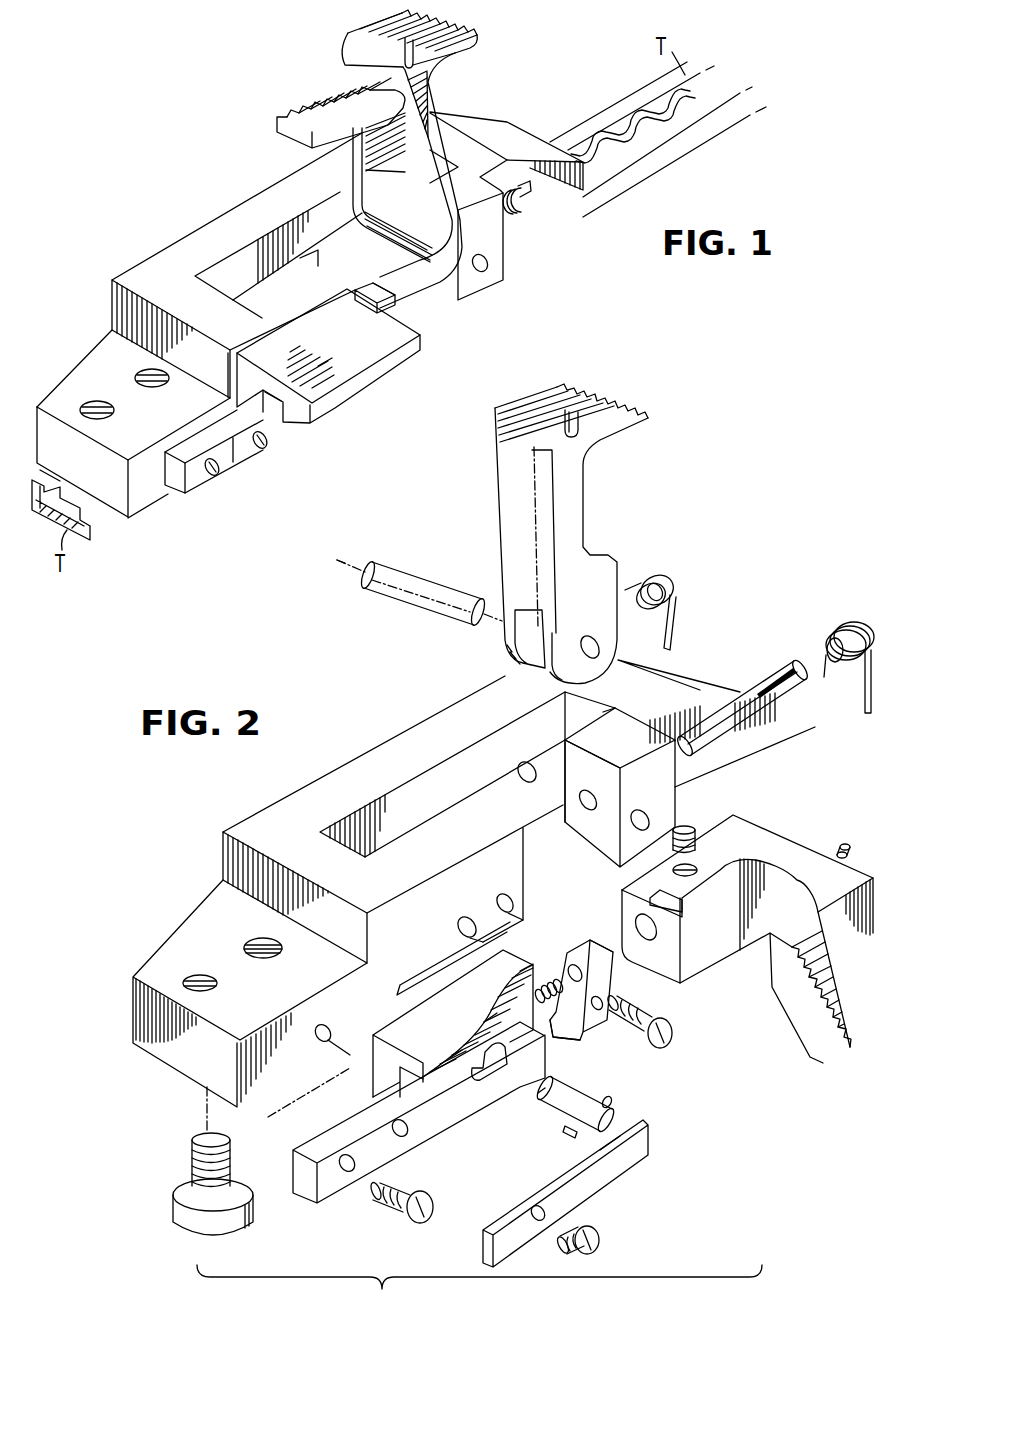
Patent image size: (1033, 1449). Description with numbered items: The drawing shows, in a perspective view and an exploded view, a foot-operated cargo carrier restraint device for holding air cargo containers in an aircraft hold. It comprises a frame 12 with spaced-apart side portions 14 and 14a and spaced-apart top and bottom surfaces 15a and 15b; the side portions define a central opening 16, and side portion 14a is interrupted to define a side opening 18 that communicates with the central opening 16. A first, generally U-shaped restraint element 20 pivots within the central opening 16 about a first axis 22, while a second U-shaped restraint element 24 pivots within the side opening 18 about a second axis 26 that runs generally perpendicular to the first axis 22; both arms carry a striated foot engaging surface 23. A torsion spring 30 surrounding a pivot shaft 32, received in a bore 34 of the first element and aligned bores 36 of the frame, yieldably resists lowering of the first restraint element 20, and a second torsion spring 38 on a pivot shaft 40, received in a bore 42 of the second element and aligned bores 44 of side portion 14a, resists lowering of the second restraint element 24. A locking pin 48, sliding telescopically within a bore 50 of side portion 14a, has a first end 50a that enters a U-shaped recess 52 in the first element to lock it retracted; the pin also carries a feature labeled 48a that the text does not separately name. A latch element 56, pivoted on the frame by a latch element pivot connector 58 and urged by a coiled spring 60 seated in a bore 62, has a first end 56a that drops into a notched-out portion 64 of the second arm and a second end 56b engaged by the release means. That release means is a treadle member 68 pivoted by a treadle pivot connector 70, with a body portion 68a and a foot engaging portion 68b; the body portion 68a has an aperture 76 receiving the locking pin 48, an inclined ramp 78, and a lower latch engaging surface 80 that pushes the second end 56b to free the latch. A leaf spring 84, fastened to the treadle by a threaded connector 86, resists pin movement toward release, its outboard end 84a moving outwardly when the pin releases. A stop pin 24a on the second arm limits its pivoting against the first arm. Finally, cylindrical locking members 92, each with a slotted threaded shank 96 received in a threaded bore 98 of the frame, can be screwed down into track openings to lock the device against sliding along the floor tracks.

In FIG. 1, the frame 12 is at (190, 206).
In FIG. 2, the frame 12 is at (256, 781).
In FIG. 1, the side portion 14 is at (233, 207).
In FIG. 2, the side portion 14 is at (348, 762).
In FIG. 1, the side portion 14a is at (260, 308).
In FIG. 2, the side portion 14a is at (637, 763).
In FIG. 1, the top surface 15a is at (158, 283).
In FIG. 2, the top surface 15a is at (270, 846).
In FIG. 1, the bottom surface 15b is at (148, 510).
In FIG. 2, the bottom surface 15b is at (165, 1060).
In FIG. 1, the central opening 16 is at (281, 236).
In FIG. 2, the central opening 16 is at (360, 822).
In FIG. 1, the side opening 18 is at (346, 258).
In FIG. 2, the side opening 18 is at (488, 803).
In FIG. 1, the first restraint element 20 is at (384, 160).
In FIG. 2, the first restraint element 20 is at (571, 535).
In FIG. 2, the first axis 22 is at (343, 563).
In FIG. 1, the striated foot engaging surface 23 is at (455, 22).
In FIG. 2, the striated foot engaging surface 23 is at (572, 388).
In FIG. 1, the second restraint element 24 is at (418, 153).
In FIG. 2, the second restraint element 24 is at (777, 828).
In FIG. 2, the stop pin 24a is at (844, 845).
In FIG. 2, the second axis 26 is at (578, 810).
In FIG. 2, the torsion spring 30 is at (663, 570).
In FIG. 1, the pivot shaft 32 is at (486, 273).
In FIG. 2, the pivot shaft 32 is at (410, 600).
In FIG. 2, the bore 34 is at (598, 648).
In FIG. 2, the aligned bores 36 is at (527, 762).
In FIG. 1, the second torsion spring 38 is at (520, 212).
In FIG. 2, the second torsion spring 38 is at (840, 622).
In FIG. 1, the pivot shaft 40 is at (530, 200).
In FIG. 2, the pivot shaft 40 is at (785, 690).
In FIG. 2, the bore 42 is at (658, 934).
In FIG. 2, the aligned bores 44 is at (586, 795).
In FIG. 2, the locking pin 48 is at (552, 1112).
In FIG. 2, the stud of pin 48a is at (612, 1102).
In FIG. 2, the bore 50 is at (465, 918).
In FIG. 2, the first end 50a is at (538, 1095).
In FIG. 1, the U-shaped recess 52 is at (416, 50).
In FIG. 2, the U-shaped recess 52 is at (578, 420).
In FIG. 1, the latch element 56 is at (362, 310).
In FIG. 2, the latch element 56 is at (600, 1028).
In FIG. 1, the first end 56a is at (373, 290).
In FIG. 2, the first end 56a is at (609, 962).
In FIG. 2, the second end 56b is at (558, 1034).
In FIG. 2, the latch element pivot connector 58 is at (676, 1042).
In FIG. 2, the coiled spring 60 is at (545, 982).
In FIG. 2, the bore 62 is at (578, 964).
In FIG. 1, the notched-out portion 64 is at (303, 262).
In FIG. 2, the notched-out portion 64 is at (670, 902).
In FIG. 1, the treadle member 68 is at (385, 373).
In FIG. 2, the treadle member 68 is at (374, 1071).
In FIG. 1, the body portion 68a is at (273, 407).
In FIG. 2, the body portion 68a is at (408, 1130).
In FIG. 1, the foot engaging portion 68b is at (340, 367).
In FIG. 1, the treadle pivot connector 70 is at (212, 477).
In FIG. 2, the treadle pivot connector 70 is at (387, 1207).
In FIG. 2, the aperture 76 is at (477, 1035).
In FIG. 2, the inclined ramp 78 is at (497, 1013).
In FIG. 2, the lower latch engaging surface 80 is at (510, 1070).
In FIG. 1, the leaf spring 84 is at (297, 417).
In FIG. 2, the leaf spring 84 is at (610, 1175).
In FIG. 2, the outboard end 84a is at (635, 1147).
In FIG. 1, the threaded connector 86 is at (260, 450).
In FIG. 2, the threaded connector 86 is at (600, 1236).
In FIG. 2, the locking member 92 is at (175, 1218).
In FIG. 1, the threaded shank 96 is at (97, 398).
In FIG. 2, the threaded shank 96 is at (263, 938).
In FIG. 2, the threaded bore 98 is at (197, 980).